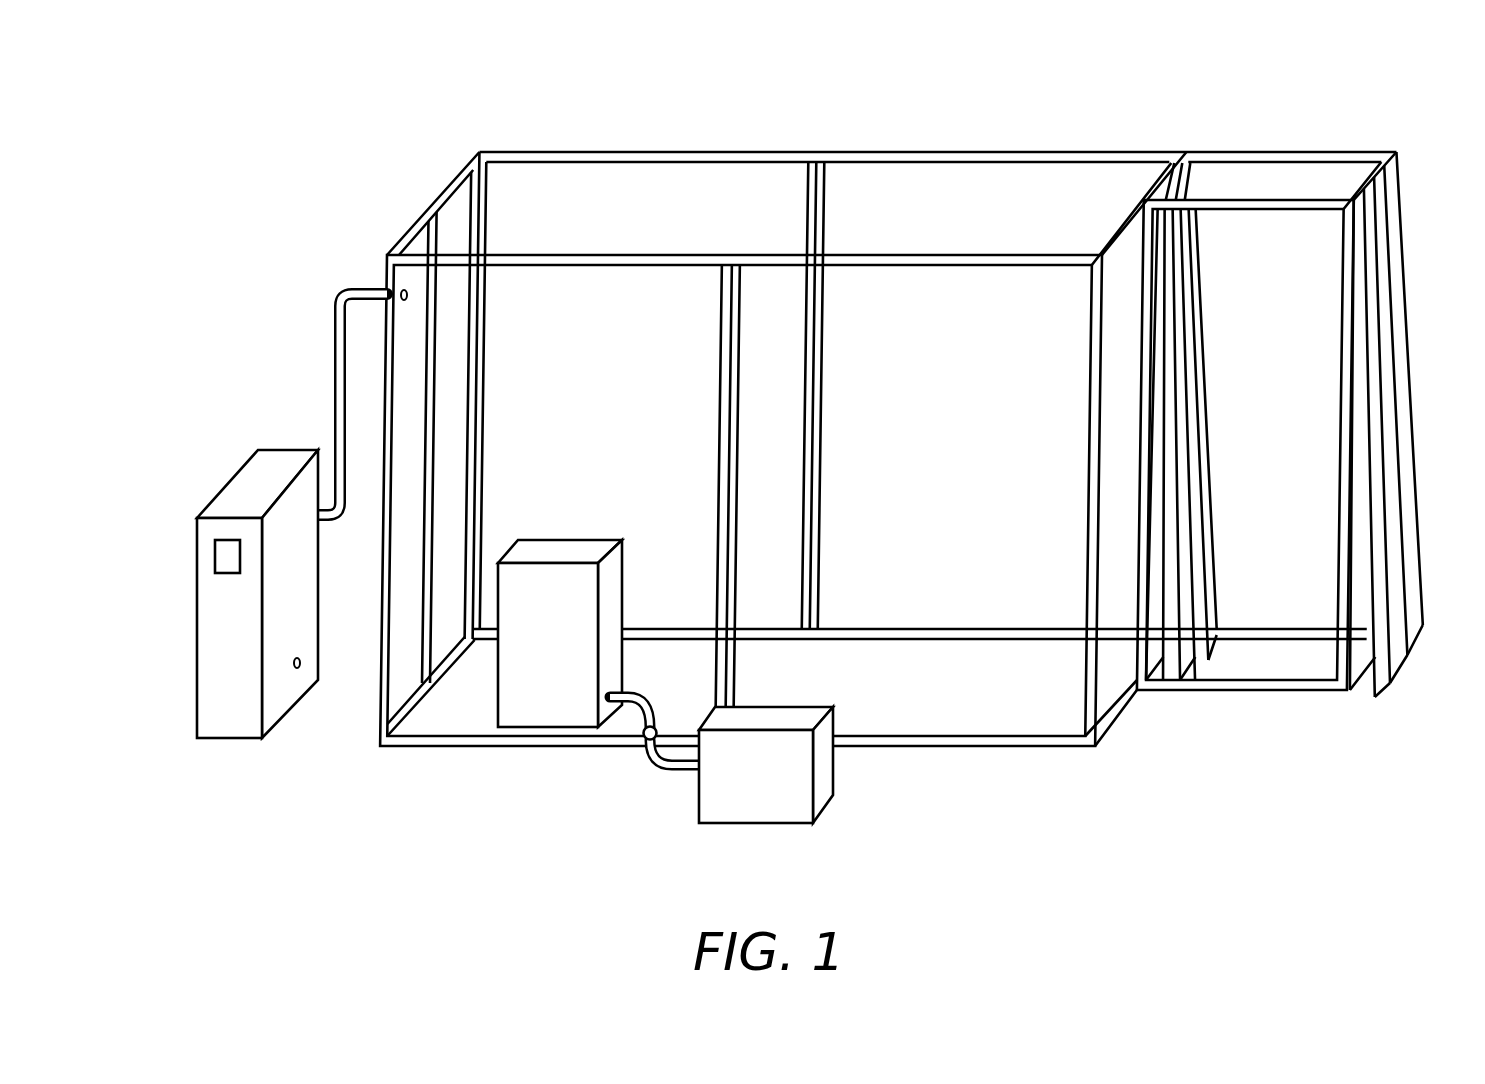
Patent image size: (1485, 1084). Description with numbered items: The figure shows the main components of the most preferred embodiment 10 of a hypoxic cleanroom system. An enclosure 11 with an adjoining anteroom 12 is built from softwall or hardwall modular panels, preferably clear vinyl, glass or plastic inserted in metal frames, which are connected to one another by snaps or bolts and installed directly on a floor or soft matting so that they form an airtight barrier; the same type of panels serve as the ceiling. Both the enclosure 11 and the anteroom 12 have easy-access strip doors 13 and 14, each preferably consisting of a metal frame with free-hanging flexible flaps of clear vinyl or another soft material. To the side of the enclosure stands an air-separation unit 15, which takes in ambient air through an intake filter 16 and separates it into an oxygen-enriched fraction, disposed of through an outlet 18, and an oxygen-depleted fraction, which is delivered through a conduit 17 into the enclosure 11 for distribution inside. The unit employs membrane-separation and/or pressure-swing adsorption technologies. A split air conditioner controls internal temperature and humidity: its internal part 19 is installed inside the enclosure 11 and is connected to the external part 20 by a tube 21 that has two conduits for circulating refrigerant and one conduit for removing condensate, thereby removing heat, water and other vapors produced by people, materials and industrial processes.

The most preferred embodiment 10 is at (345, 114).
The enclosure 11 is at (637, 178).
The anteroom 12 is at (1290, 178).
The strip door 13 is at (1192, 190).
The strip door 14 is at (1400, 257).
The air-separation unit 15 is at (276, 460).
The intake filter 16 is at (222, 556).
The conduit 17 is at (338, 325).
The outlet 18 is at (300, 668).
The internal part of the air conditioner 19 is at (545, 710).
The external part 20 is at (760, 802).
The tube 21 is at (653, 765).